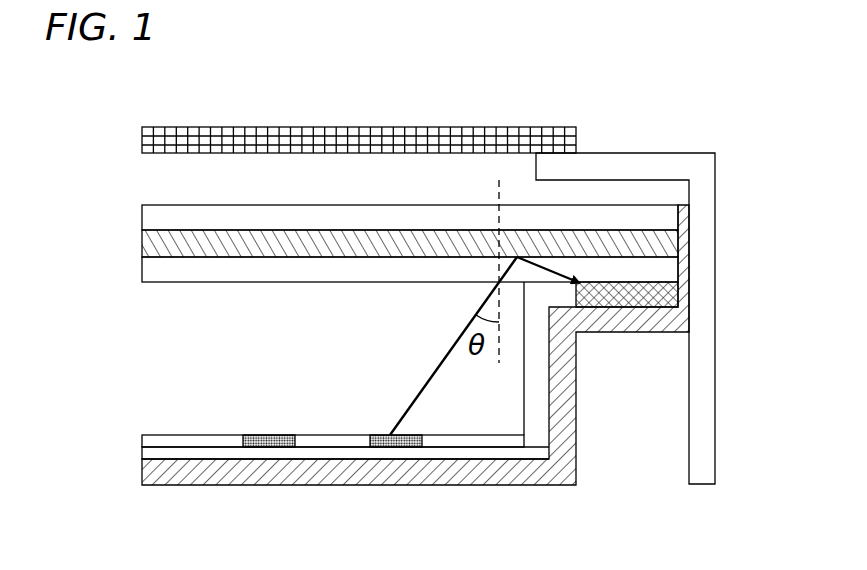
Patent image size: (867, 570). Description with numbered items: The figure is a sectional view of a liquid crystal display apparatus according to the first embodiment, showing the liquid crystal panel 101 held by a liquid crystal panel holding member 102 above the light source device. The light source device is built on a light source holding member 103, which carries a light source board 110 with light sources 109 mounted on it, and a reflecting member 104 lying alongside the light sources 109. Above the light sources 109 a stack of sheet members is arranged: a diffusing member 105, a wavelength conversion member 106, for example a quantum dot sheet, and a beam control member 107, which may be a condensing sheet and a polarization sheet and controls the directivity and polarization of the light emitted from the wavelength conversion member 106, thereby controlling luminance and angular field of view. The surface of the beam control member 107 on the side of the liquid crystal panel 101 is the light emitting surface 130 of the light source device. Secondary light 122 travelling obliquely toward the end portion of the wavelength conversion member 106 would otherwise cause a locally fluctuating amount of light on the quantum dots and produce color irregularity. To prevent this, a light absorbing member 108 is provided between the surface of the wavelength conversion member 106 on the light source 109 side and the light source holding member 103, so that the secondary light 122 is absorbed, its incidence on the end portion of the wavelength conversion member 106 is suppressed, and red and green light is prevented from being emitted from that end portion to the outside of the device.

The liquid crystal panel 101 is at (142, 133).
The liquid crystal panel holding member 102 is at (698, 460).
The light source holding member 103 is at (150, 470).
The reflecting member 104 is at (155, 435).
The diffusing member 105 is at (147, 270).
The wavelength conversion member 106 is at (143, 240).
The beam control member 107 is at (143, 210).
The light absorbing member 108 is at (672, 290).
The light source 109 is at (418, 435).
The light source board 110 is at (142, 452).
The secondary light 122 is at (438, 363).
The light emitting surface 130 is at (356, 236).